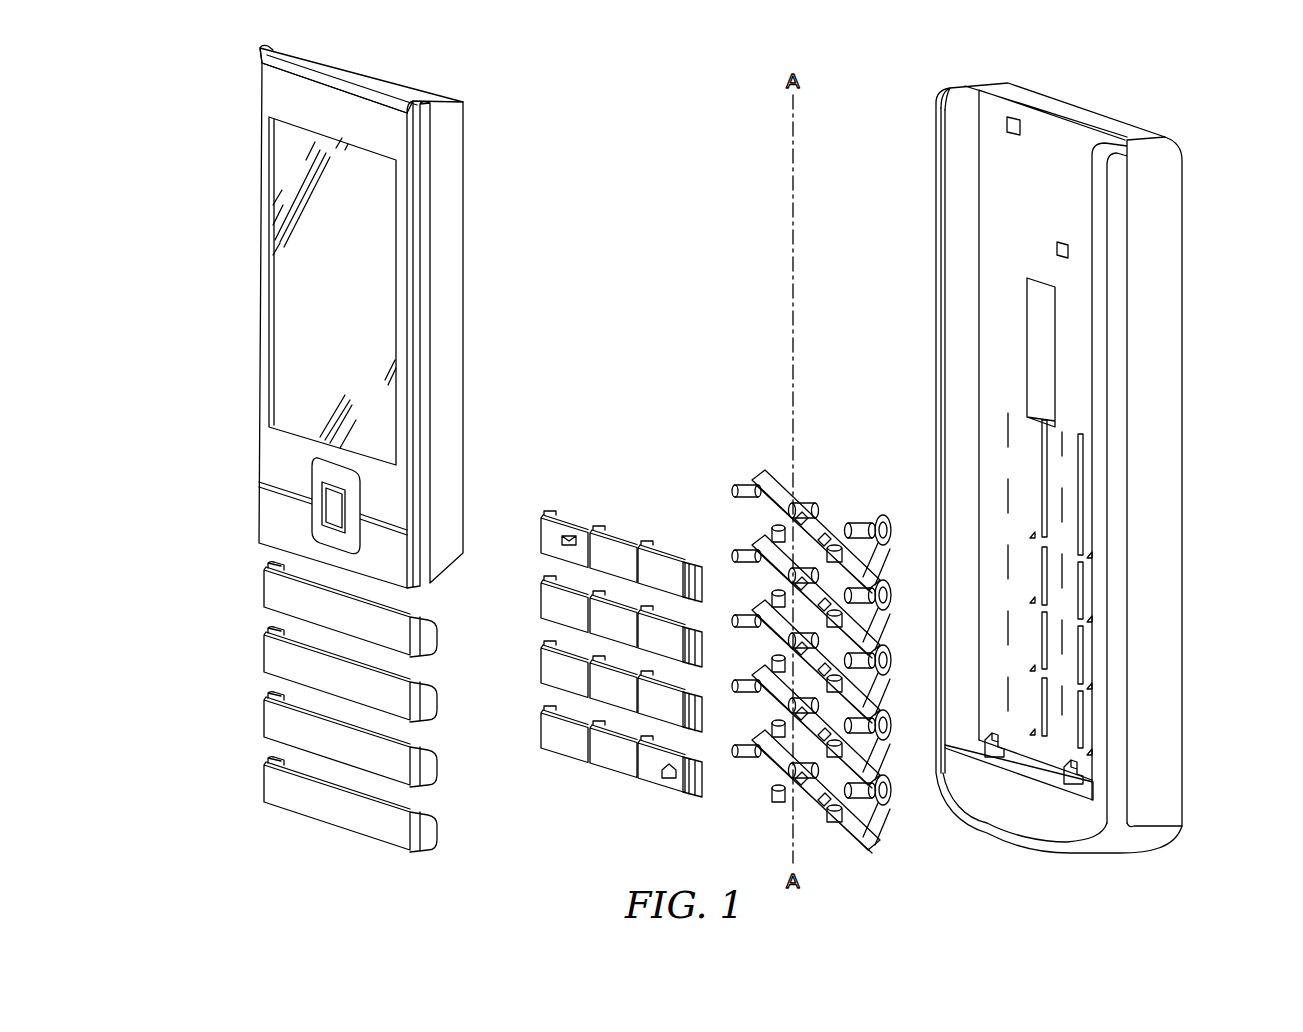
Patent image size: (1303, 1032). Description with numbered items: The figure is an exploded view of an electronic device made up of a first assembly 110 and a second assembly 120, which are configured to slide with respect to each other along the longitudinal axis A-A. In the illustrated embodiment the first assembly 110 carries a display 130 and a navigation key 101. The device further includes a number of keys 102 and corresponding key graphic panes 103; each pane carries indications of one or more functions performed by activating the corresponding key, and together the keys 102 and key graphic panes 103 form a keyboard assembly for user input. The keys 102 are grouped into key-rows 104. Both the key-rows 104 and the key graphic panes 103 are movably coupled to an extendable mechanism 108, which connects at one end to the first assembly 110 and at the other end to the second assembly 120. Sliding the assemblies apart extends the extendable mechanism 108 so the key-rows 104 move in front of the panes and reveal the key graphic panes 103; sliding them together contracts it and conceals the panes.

The first assembly 110 is at (258, 134).
The display 130 is at (290, 305).
The navigation key 101 is at (333, 512).
The keys 102 is at (332, 824).
The key-rows 104 is at (317, 726).
The key graphic panes 103 is at (538, 535).
The extendable mechanism 108 is at (868, 527).
The second assembly 120 is at (1184, 232).